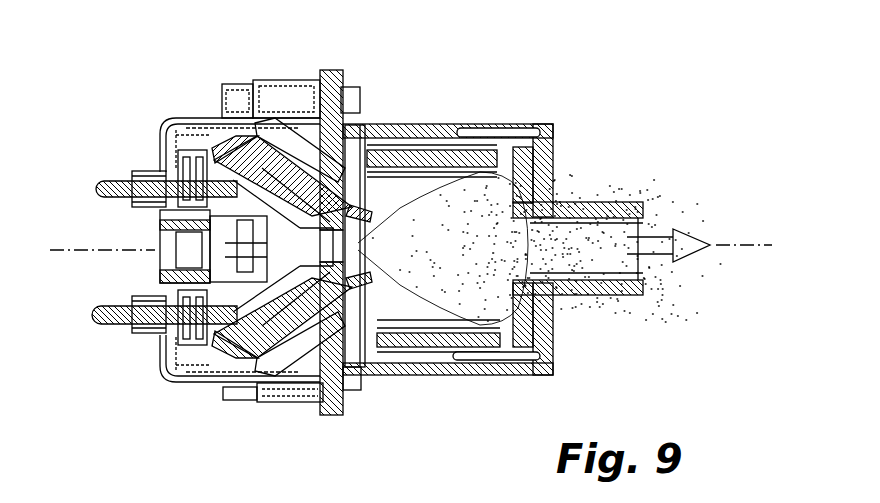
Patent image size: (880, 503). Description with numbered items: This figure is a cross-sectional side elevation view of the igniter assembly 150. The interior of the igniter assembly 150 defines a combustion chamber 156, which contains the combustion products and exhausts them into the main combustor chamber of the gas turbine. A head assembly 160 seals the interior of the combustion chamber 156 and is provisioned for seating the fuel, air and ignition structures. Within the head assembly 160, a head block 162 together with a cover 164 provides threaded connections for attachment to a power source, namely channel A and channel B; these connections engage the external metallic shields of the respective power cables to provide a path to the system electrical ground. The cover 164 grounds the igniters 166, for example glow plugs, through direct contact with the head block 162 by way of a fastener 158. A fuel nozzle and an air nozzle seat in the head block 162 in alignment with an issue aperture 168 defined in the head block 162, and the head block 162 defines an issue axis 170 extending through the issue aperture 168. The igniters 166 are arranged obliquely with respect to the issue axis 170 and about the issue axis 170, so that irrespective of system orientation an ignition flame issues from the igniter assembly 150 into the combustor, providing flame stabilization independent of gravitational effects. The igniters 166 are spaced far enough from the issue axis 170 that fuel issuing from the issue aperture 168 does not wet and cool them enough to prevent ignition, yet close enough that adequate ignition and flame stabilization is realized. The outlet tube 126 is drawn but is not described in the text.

The igniter assembly 150 is at (167, 88).
The outlet tube 126 is at (607, 203).
The combustion chamber 156 is at (392, 196).
The fastener 158 is at (166, 250).
The head assembly 160 is at (258, 412).
The head block 162 is at (297, 386).
The cover 164 is at (160, 364).
The igniters 166 is at (388, 300).
The issue aperture 168 is at (356, 160).
The issue axis 170 is at (440, 262).